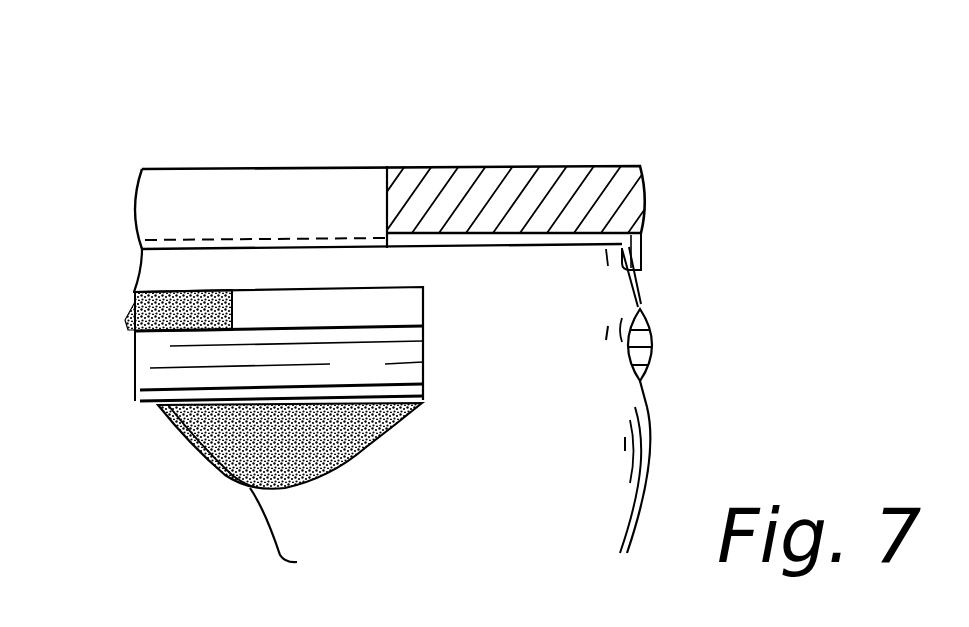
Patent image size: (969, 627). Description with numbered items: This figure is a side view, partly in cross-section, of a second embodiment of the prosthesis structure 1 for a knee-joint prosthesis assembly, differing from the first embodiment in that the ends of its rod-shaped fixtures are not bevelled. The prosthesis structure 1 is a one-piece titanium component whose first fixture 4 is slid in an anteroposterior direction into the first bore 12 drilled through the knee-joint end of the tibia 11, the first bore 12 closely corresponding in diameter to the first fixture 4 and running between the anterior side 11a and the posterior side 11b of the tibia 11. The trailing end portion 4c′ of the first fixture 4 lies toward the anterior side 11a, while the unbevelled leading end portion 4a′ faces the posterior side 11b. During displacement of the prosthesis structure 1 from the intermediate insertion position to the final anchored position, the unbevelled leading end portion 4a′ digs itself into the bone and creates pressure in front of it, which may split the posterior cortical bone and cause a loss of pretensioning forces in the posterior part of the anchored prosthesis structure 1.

The prosthesis structure 1 is at (400, 158).
The first fixture 4 is at (143, 400).
The leading end portion 4a′ is at (135, 372).
The trailing end portion 4c′ is at (754, 327).
The tibia 11 is at (500, 532).
The anterior side 11a is at (652, 450).
The posterior side 11b is at (175, 432).
The first bore 12 is at (649, 327).